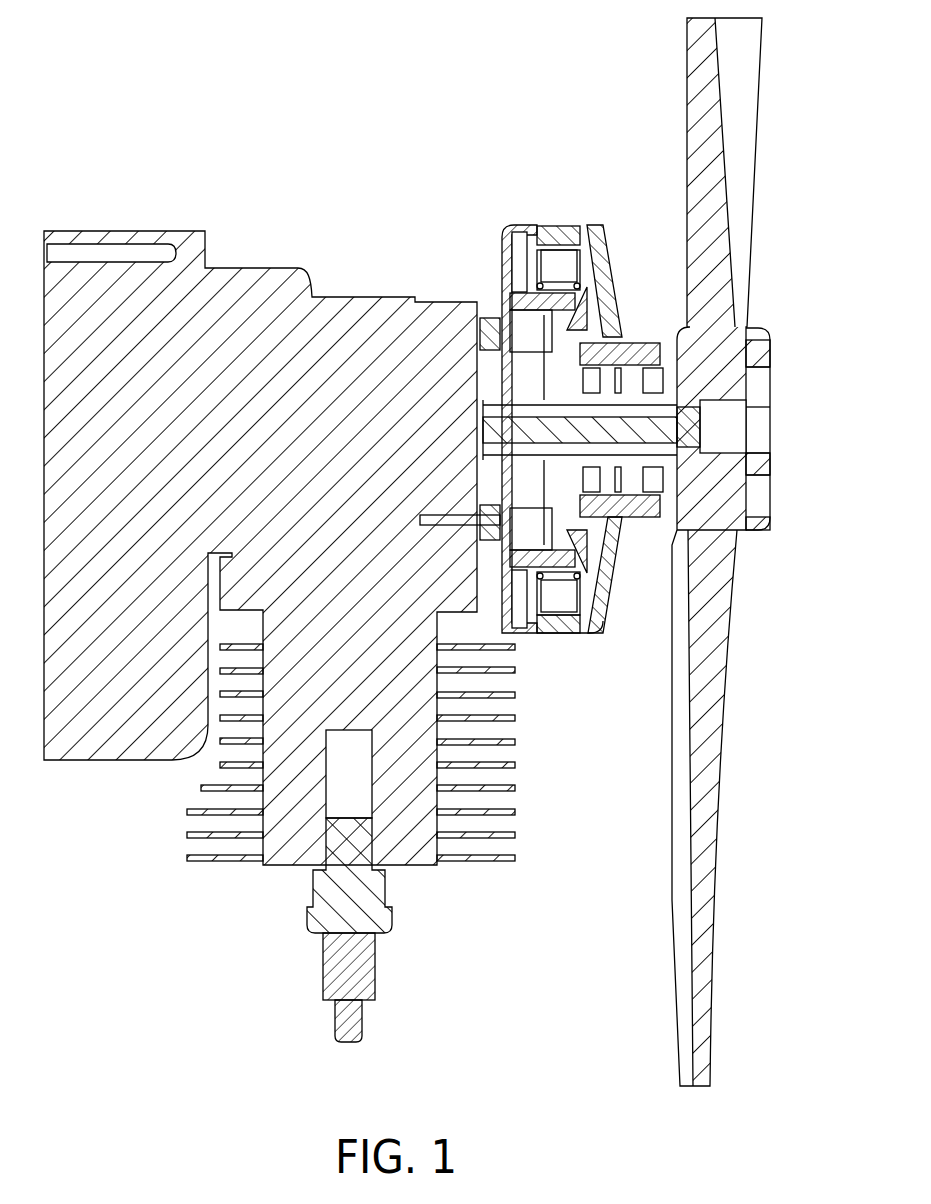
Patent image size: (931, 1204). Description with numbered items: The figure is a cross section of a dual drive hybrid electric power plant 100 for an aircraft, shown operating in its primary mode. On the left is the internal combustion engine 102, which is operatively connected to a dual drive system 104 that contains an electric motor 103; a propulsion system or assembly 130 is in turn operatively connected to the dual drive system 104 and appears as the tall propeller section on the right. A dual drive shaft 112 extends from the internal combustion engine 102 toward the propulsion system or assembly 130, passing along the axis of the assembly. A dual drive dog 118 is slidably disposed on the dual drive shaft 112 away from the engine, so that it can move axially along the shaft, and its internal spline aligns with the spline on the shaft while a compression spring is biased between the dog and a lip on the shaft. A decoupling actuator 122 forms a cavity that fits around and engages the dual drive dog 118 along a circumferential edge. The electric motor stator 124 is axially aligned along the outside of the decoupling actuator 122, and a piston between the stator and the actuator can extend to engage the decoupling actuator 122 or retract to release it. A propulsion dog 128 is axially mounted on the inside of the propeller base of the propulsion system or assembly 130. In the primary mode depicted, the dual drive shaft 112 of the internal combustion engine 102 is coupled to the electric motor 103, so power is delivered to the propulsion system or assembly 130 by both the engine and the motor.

The dual drive hybrid electric power plant 100 is at (406, 40).
The internal combustion engine 102 is at (278, 285).
The electric motor 103 is at (620, 214).
The dual drive system 104 is at (561, 225).
The dual drive shaft 112 is at (660, 455).
The dual drive dog 118 is at (762, 455).
The decoupling actuator 122 is at (578, 318).
The electric motor stator 124 is at (508, 300).
The propulsion dog 128 is at (686, 430).
The propulsion system or assembly 130 is at (765, 155).